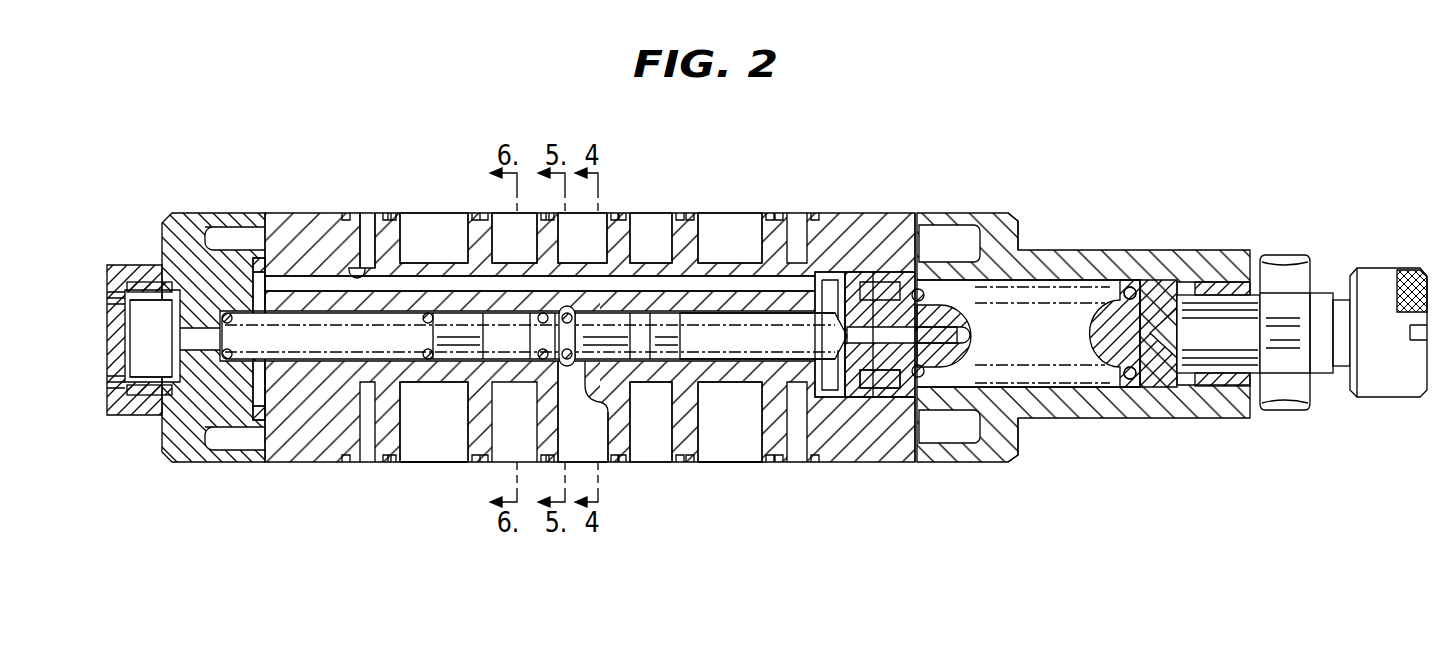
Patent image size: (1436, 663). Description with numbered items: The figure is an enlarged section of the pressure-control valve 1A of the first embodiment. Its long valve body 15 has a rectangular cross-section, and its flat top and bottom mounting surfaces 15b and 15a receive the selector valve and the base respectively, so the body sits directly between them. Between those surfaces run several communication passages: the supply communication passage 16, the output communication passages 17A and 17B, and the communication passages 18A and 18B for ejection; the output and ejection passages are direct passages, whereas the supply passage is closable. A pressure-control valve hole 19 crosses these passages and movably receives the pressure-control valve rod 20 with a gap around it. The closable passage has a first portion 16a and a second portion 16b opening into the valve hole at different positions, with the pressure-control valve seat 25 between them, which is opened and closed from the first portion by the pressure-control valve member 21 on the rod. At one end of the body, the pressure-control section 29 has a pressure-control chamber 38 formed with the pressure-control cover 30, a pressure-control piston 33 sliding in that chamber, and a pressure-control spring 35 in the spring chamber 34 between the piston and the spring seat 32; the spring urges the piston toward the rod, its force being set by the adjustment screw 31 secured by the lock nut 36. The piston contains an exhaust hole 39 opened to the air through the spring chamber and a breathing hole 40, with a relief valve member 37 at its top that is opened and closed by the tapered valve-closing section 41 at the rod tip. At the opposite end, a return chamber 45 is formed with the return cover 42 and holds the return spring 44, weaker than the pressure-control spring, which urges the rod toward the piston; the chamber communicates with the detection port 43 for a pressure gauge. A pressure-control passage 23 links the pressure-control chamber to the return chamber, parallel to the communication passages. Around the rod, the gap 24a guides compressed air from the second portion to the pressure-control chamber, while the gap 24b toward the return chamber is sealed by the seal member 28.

The pressure-control valve 1A is at (993, 120).
The valve body 15 is at (898, 213).
The mounting surface 15a is at (878, 462).
The mounting surface 15b is at (873, 213).
The supply communication passage 16 is at (588, 462).
The first portion 16a is at (612, 443).
The second portion 16b is at (600, 235).
The output communication passage 17A is at (482, 458).
The output communication passage 17B is at (665, 440).
The communication passage for ejection 18A is at (410, 465).
The communication passage for ejection 18B is at (735, 465).
The pressure-control valve hole 19 is at (688, 225).
The pressure-control valve rod 20 is at (728, 318).
The pressure-control valve member 21 is at (565, 365).
The pressure-control passage 23 is at (368, 266).
The gap 24a is at (743, 361).
The gap 24b is at (440, 318).
The pressure-control valve seat 25 is at (590, 305).
The seal member 28 is at (540, 318).
The pressure-control section 29 is at (1065, 174).
The pressure-control cover 30 is at (1043, 250).
The adjustment screw 31 is at (1385, 280).
The spring seat 32 is at (1162, 386).
The pressure-control piston 33 is at (907, 440).
The spring chamber 34 is at (1004, 341).
The pressure-control spring 35 is at (1129, 290).
The lock nut 36 is at (1280, 262).
The relief valve member 37 is at (870, 440).
The pressure-control chamber 38 is at (828, 240).
The exhaust hole 39 is at (940, 318).
The breathing hole 40 is at (915, 462).
The tapered valve-closing section 41 is at (850, 255).
The return cover 42 is at (185, 232).
The detection port 43 is at (138, 357).
The return spring 44 is at (222, 357).
The return chamber 45 is at (307, 318).